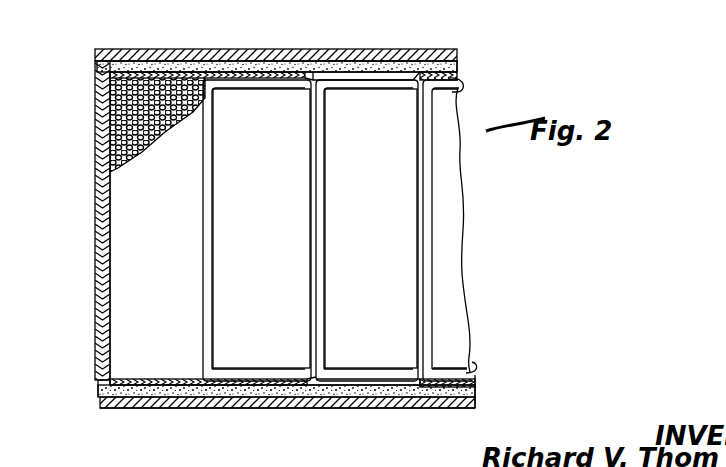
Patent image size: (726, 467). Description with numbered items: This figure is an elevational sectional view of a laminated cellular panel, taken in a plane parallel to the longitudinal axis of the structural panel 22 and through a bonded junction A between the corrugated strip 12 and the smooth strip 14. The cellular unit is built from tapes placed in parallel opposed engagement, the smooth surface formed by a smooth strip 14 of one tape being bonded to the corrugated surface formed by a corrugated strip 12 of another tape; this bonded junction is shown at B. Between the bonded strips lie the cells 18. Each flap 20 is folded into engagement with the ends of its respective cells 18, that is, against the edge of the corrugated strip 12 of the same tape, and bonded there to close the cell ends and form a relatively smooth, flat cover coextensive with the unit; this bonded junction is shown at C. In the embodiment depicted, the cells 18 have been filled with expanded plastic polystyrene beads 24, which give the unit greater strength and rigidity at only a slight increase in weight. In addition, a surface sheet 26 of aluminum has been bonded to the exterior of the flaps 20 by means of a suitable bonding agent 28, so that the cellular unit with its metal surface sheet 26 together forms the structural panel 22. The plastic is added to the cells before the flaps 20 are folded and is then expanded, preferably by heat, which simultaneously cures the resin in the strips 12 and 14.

The corrugated strip 12 is at (108, 229).
The smooth strip 14 is at (204, 330).
The cells 18 is at (128, 296).
The flap 20 is at (250, 62).
The structural panel 22 is at (116, 416).
The expanded plastic polystyrene beads 24 is at (115, 123).
The surface sheet 26 is at (286, 58).
The bonding agent 28 is at (97, 65).
The bonded junction between strips A is at (206, 180).
The bonded junction of tapes B is at (421, 130).
The bonded junction of flap and cell ends C is at (462, 88).